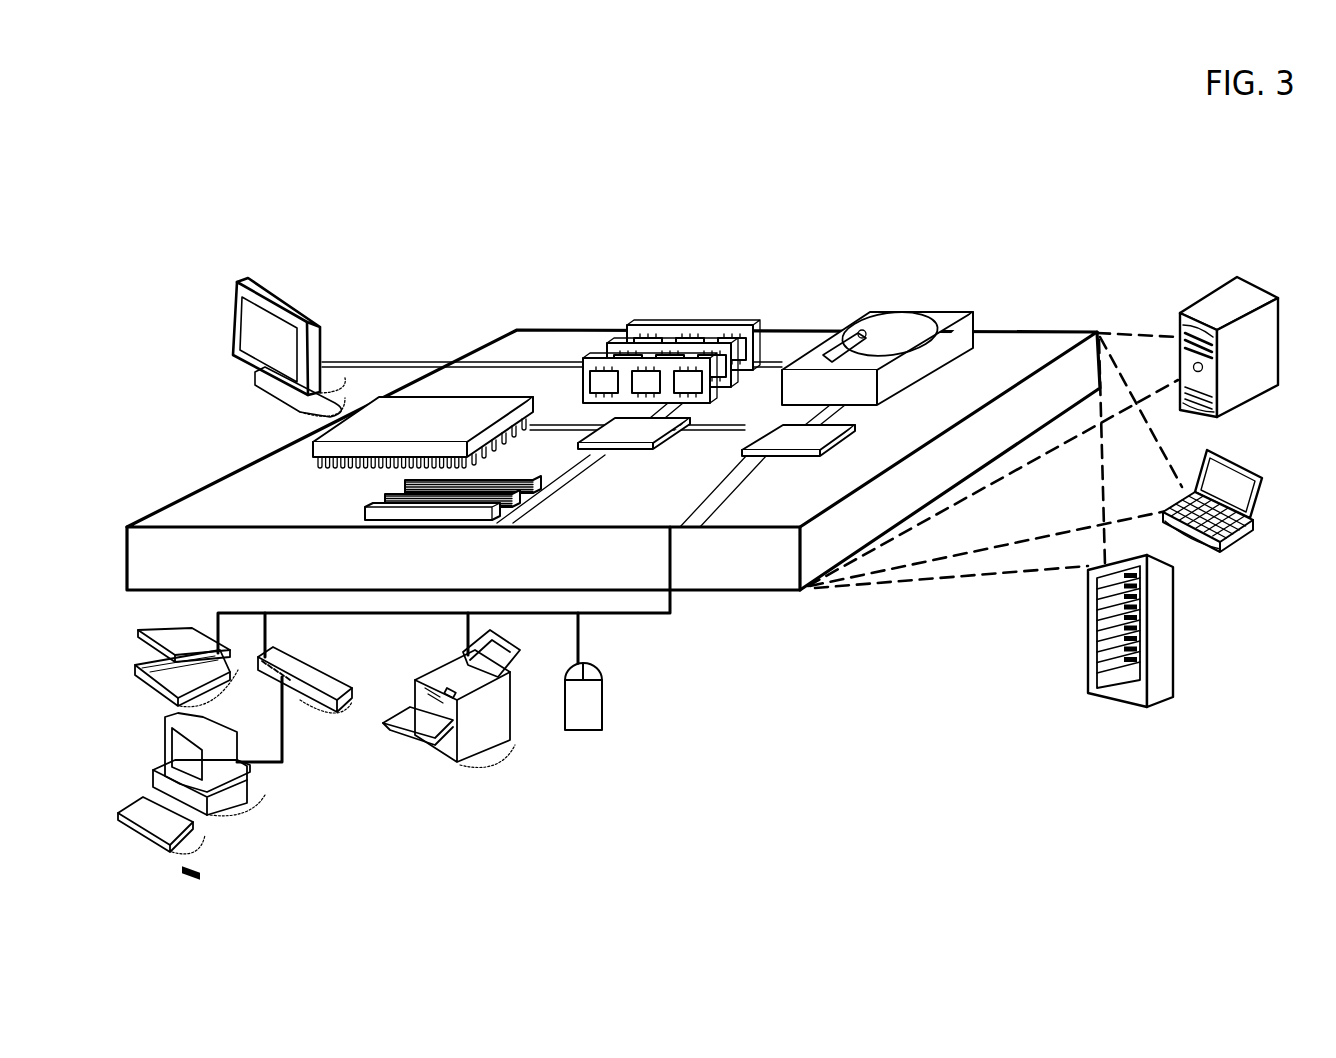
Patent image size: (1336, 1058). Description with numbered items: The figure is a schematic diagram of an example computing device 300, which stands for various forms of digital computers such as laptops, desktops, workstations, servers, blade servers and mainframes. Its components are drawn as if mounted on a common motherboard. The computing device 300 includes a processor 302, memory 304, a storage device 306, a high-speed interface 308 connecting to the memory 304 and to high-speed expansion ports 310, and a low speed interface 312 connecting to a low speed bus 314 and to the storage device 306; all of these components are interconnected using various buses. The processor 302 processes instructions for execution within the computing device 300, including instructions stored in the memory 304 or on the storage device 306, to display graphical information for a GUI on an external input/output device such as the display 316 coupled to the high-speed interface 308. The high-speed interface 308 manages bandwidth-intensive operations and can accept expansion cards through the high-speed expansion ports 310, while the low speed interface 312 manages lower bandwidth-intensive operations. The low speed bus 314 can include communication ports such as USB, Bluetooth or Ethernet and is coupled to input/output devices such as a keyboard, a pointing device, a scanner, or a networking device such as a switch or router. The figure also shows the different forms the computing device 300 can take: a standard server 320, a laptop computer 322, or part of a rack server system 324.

The computing device 300 is at (428, 205).
The processor 302 is at (313, 447).
The memory 304 is at (645, 320).
The storage device 306 is at (870, 315).
The high-speed interface 308 is at (550, 403).
The high-speed expansion ports 310 is at (383, 498).
The low speed interface 312 is at (800, 437).
The low speed bus 314 is at (680, 535).
The display 316 is at (237, 287).
The standard server 320 is at (1178, 317).
The laptop computer 322 is at (1208, 452).
The rack server system 324 is at (1088, 653).